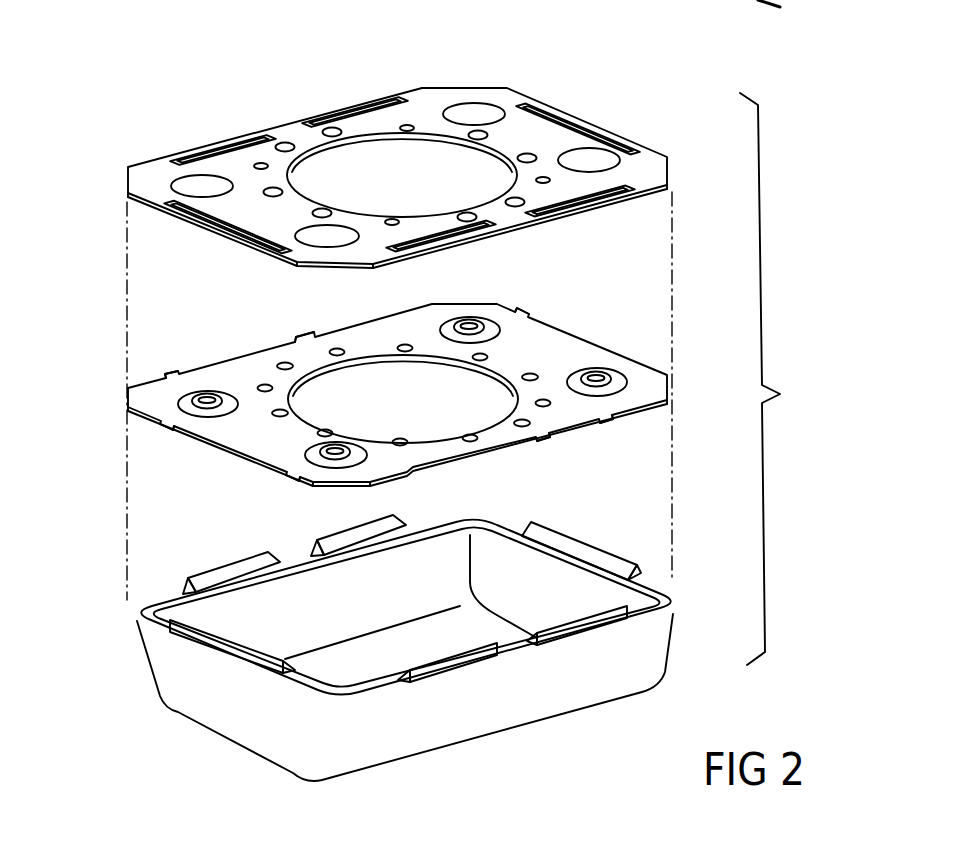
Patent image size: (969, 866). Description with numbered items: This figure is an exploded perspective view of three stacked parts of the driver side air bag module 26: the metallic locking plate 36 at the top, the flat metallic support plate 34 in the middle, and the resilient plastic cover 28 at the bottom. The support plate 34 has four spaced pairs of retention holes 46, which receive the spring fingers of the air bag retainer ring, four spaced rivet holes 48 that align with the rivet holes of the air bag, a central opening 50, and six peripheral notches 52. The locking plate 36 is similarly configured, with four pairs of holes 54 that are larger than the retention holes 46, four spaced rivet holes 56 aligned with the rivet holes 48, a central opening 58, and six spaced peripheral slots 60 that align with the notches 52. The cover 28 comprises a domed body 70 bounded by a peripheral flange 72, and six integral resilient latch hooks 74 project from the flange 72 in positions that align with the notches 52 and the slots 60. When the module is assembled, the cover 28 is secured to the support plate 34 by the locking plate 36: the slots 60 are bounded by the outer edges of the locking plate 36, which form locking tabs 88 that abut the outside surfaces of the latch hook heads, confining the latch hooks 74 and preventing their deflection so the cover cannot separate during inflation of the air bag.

The driver side air bag module 26 is at (776, 379).
The cover 28 is at (365, 638).
The support plate 34 is at (104, 397).
The locking plate 36 is at (108, 181).
The retention holes 46 is at (285, 363).
The rivet holes 48 is at (385, 441).
The central opening 50 is at (358, 360).
The peripheral notches 52 is at (208, 370).
The holes 54 is at (333, 128).
The rivet holes 56 is at (392, 220).
The central opening 58 is at (383, 135).
The peripheral slots 60 is at (233, 137).
The domed body 70 is at (410, 730).
The peripheral flange 72 is at (130, 612).
The latch hooks 74 is at (337, 540).
The locking tabs 88 is at (195, 145).